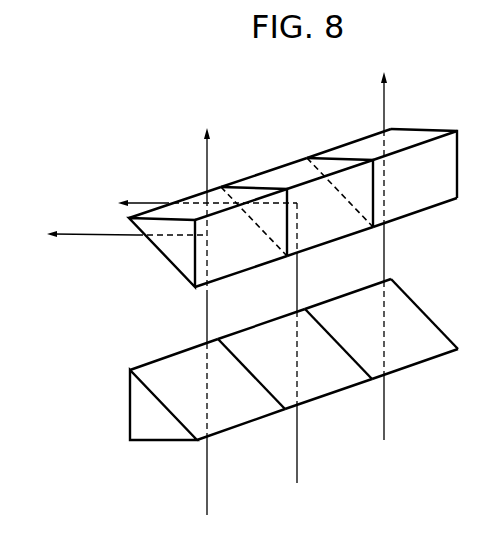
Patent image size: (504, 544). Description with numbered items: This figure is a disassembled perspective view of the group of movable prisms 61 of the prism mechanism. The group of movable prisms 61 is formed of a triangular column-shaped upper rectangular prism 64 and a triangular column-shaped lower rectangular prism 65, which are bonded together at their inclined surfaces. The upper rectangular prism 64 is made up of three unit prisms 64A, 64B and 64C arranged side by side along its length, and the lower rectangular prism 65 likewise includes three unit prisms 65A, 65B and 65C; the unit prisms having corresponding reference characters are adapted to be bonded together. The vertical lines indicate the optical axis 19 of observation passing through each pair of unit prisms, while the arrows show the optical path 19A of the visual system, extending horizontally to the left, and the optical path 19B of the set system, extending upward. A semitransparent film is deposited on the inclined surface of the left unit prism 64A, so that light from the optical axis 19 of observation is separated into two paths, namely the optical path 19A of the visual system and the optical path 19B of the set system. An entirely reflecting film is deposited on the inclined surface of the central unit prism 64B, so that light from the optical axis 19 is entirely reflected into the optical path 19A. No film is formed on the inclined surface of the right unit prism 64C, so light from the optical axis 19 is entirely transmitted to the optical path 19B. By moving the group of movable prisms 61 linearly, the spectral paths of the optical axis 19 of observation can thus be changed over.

The group of movable prisms 61 is at (87, 358).
The upper rectangular prism 64 is at (170, 253).
The unit prism 64A is at (192, 194).
The unit prism 64B is at (292, 167).
The unit prism 64C is at (352, 143).
The lower rectangular prism 65 is at (135, 413).
The unit prism 65A is at (242, 423).
The unit prism 65B is at (339, 385).
The unit prism 65C is at (433, 332).
The optical axis of observation 19 is at (205, 507).
The optical path of visual system 19A is at (147, 202).
The optical path of set system 19B is at (210, 157).